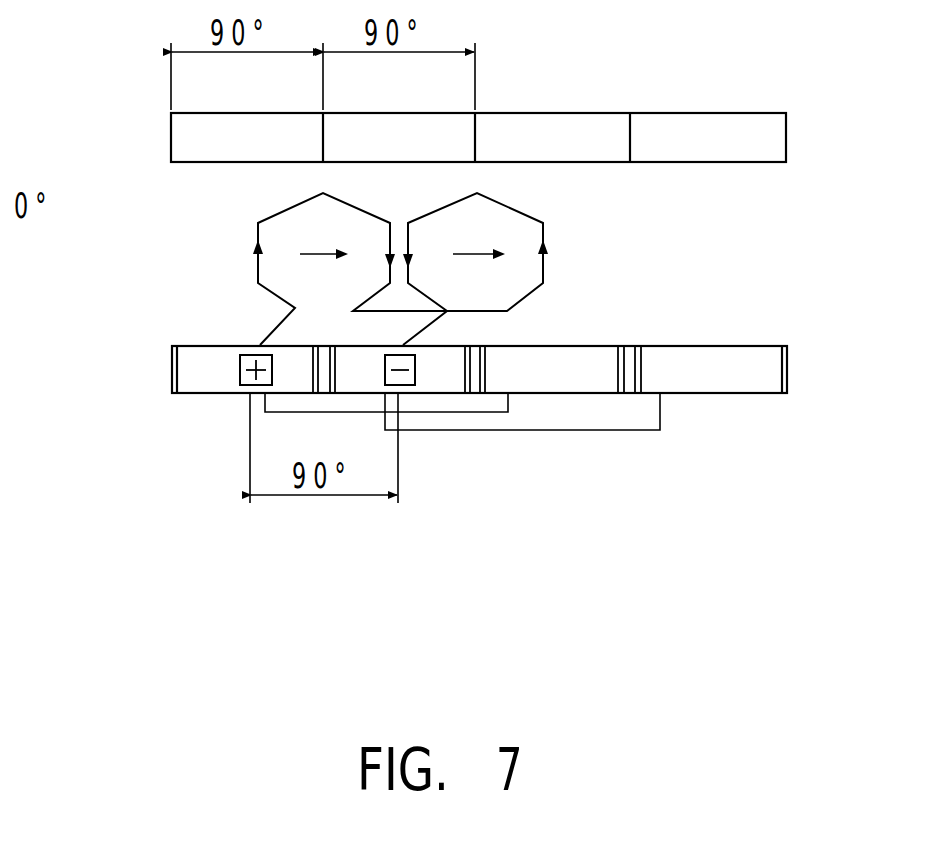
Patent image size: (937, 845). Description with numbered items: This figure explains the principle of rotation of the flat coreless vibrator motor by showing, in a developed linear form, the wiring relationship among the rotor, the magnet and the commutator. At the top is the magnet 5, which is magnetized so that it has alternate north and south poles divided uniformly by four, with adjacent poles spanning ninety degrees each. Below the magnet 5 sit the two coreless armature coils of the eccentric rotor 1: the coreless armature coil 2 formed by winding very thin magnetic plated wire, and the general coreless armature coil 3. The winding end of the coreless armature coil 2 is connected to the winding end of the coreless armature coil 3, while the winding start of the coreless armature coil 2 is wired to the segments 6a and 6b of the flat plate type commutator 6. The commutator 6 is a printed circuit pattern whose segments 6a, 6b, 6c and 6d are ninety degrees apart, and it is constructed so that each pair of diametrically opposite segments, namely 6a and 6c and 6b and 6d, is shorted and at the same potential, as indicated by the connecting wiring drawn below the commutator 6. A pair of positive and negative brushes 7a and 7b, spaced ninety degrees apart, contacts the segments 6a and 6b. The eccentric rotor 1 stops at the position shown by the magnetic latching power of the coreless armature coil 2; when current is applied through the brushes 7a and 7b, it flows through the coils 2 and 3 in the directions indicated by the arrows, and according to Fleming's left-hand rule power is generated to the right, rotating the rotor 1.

The eccentric rotor 1 is at (584, 255).
The coreless armature coil 2 is at (557, 208).
The coreless armature coil 3 is at (287, 218).
The magnet 5 is at (822, 137).
The flat plate type commutator 6 is at (514, 388).
The segment 6a is at (229, 368).
The segment 6b is at (376, 368).
The segment 6c is at (551, 370).
The segment 6d is at (777, 373).
The positive brush 7a is at (177, 465).
The negative brush 7b is at (452, 473).